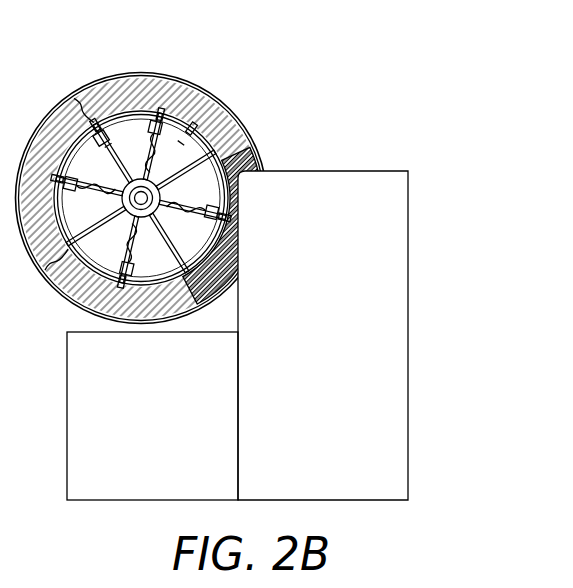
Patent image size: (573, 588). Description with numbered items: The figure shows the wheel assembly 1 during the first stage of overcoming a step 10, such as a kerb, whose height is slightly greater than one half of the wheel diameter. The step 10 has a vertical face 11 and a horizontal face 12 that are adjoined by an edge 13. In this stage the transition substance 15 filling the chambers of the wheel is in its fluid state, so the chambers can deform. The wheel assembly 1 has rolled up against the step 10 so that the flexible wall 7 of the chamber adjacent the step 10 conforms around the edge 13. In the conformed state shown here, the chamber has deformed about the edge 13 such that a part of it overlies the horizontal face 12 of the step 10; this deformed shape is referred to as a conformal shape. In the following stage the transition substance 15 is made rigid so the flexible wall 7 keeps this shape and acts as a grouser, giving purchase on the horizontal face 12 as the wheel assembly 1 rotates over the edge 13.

The wheel assembly 1 is at (160, 167).
The flexible wall 7 is at (256, 141).
The step 10 is at (271, 335).
The vertical face 11 is at (240, 309).
The horizontal face 12 is at (357, 172).
The edge 13 is at (241, 175).
The transition substance 15 is at (243, 148).